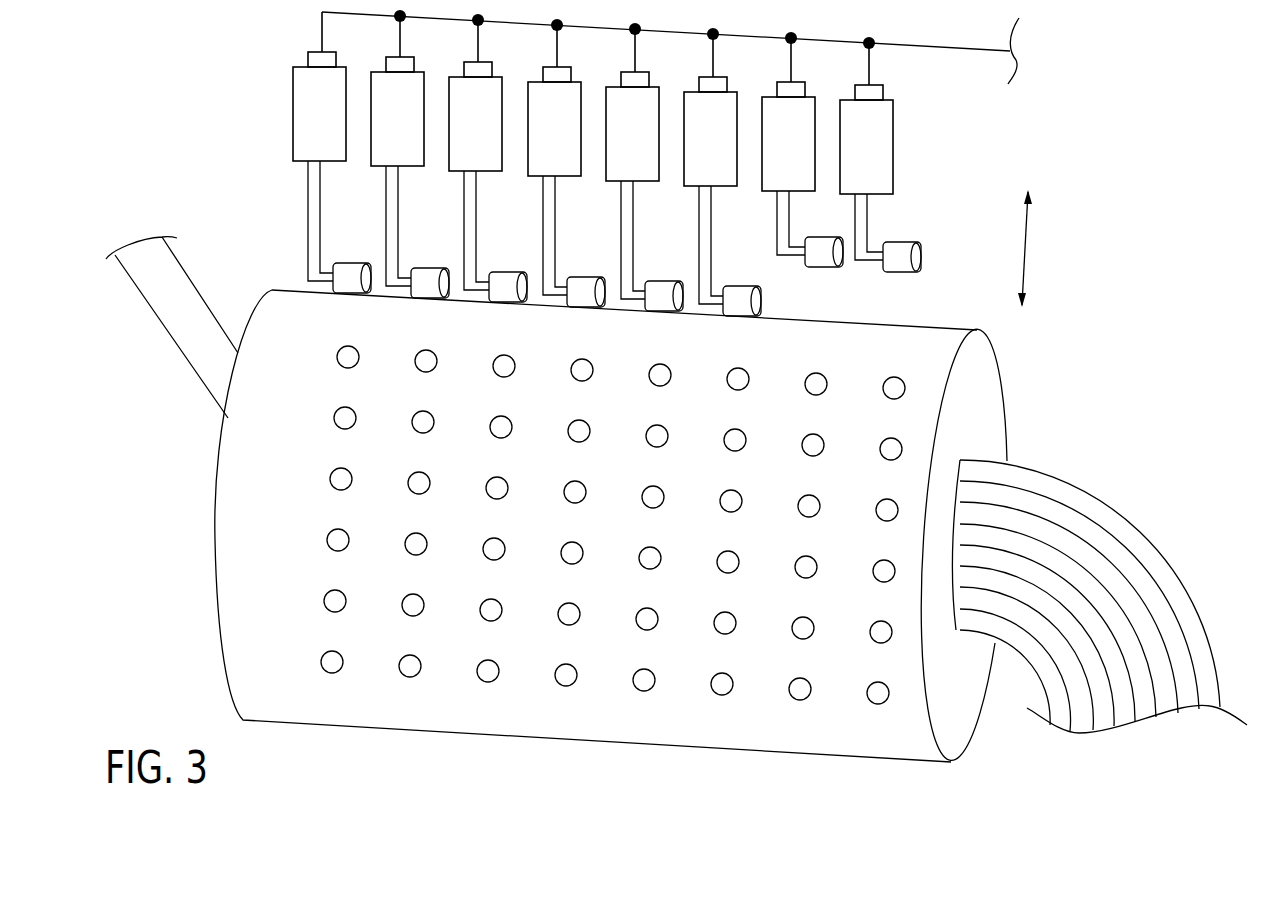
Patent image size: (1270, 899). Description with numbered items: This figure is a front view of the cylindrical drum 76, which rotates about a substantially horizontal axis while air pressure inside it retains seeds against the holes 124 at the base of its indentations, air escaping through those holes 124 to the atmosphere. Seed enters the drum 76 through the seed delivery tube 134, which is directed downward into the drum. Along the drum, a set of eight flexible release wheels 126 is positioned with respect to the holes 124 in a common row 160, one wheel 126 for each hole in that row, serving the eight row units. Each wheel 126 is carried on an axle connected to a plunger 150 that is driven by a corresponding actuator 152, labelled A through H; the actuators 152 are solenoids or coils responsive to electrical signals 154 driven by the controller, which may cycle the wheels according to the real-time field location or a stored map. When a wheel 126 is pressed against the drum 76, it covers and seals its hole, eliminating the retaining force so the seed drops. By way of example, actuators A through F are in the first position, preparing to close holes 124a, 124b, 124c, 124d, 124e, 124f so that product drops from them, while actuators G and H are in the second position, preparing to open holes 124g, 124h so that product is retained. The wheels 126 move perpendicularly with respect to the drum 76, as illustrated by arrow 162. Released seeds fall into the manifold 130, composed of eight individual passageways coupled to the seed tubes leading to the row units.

The drum 76 is at (245, 662).
The hole 124 is at (412, 669).
The hole 124a is at (344, 360).
The hole 124b is at (422, 364).
The hole 124c is at (500, 369).
The hole 124d is at (578, 373).
The hole 124e is at (656, 378).
The hole 124f is at (734, 382).
The hole 124g is at (812, 387).
The hole 124h is at (890, 391).
The release wheel 126 is at (350, 272).
The manifold 130 is at (1118, 475).
The seed delivery tube 134 is at (180, 330).
The plunger 150 is at (321, 193).
The actuator 152 is at (593, 103).
The electrical signals 154 is at (938, 46).
The common row 160 is at (270, 248).
The arrow 162 is at (1027, 246).